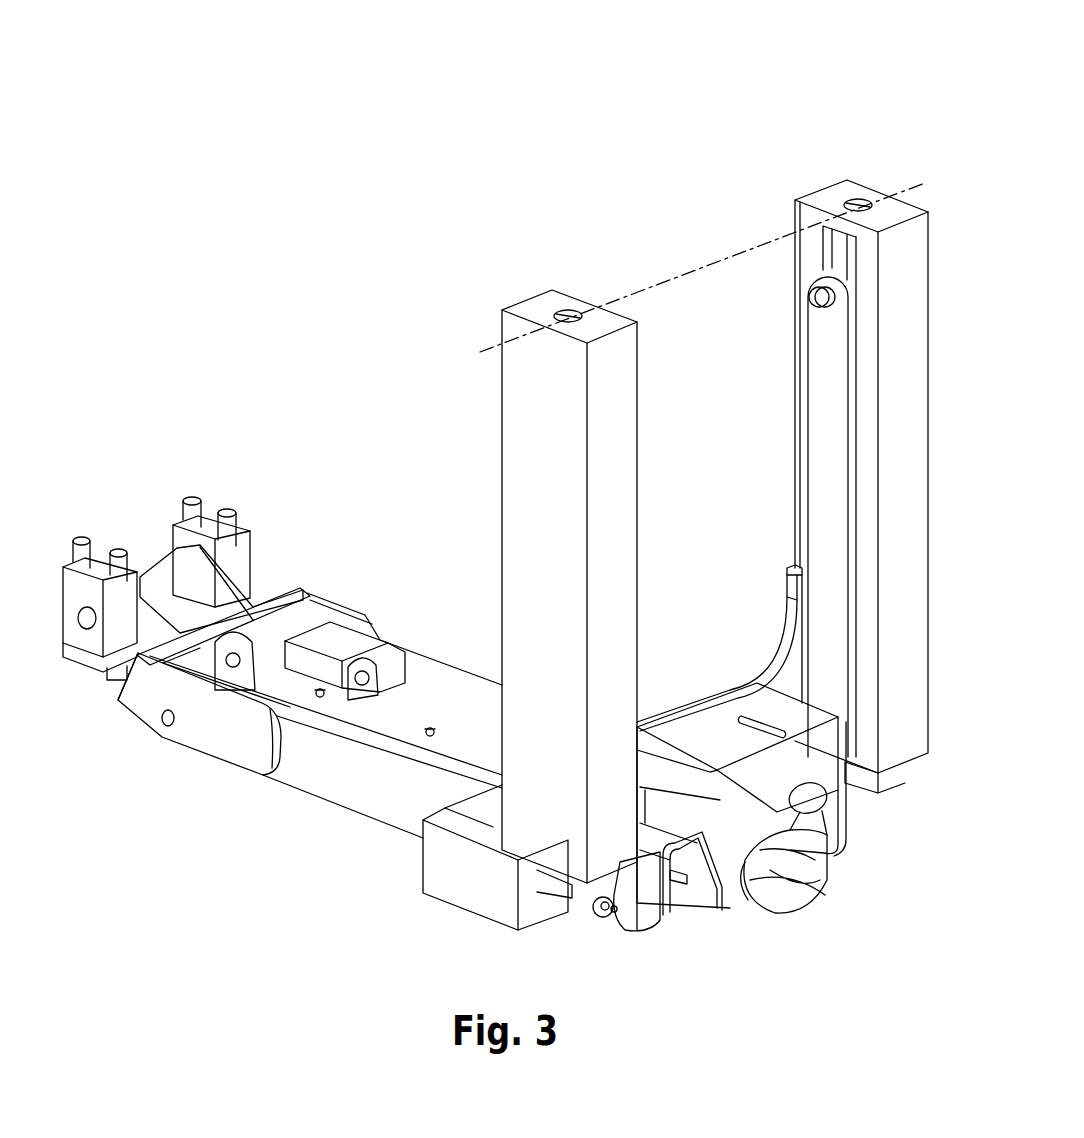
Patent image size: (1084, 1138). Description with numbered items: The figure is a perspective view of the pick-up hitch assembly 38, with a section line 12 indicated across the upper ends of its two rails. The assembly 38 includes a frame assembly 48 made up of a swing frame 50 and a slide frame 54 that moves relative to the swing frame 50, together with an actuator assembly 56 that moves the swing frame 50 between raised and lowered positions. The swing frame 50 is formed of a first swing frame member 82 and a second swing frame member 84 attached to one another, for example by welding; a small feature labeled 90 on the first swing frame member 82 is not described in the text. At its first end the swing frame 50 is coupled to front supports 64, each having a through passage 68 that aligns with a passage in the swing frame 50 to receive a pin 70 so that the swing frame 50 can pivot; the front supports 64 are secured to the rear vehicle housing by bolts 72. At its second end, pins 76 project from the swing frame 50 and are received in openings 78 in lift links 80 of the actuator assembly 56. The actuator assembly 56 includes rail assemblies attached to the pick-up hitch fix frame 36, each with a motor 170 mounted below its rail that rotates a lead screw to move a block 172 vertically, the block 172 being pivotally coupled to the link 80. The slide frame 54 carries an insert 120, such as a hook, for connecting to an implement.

The pick-up hitch assembly 38 is at (778, 96).
The section line 12- 12 is at (480, 352).
The block 172 is at (830, 258).
The lift link 80 is at (826, 380).
The actuator assembly 56 is at (940, 543).
The bolts 72 is at (223, 512).
The through passage 68 is at (65, 590).
The front supports 64 is at (65, 627).
The pin 70 is at (88, 630).
The aperture 90 is at (167, 728).
The first swing frame member 82 is at (213, 742).
The frame assembly 48 is at (286, 810).
The second swing frame member 84 is at (356, 797).
The swing frame 50 is at (460, 660).
The pick-up hitch fix frame 36 is at (490, 810).
The motor 170 is at (490, 910).
The pins 76 is at (596, 915).
The openings 78 is at (612, 918).
The slide frame 54 is at (690, 865).
The insert 120 is at (795, 895).